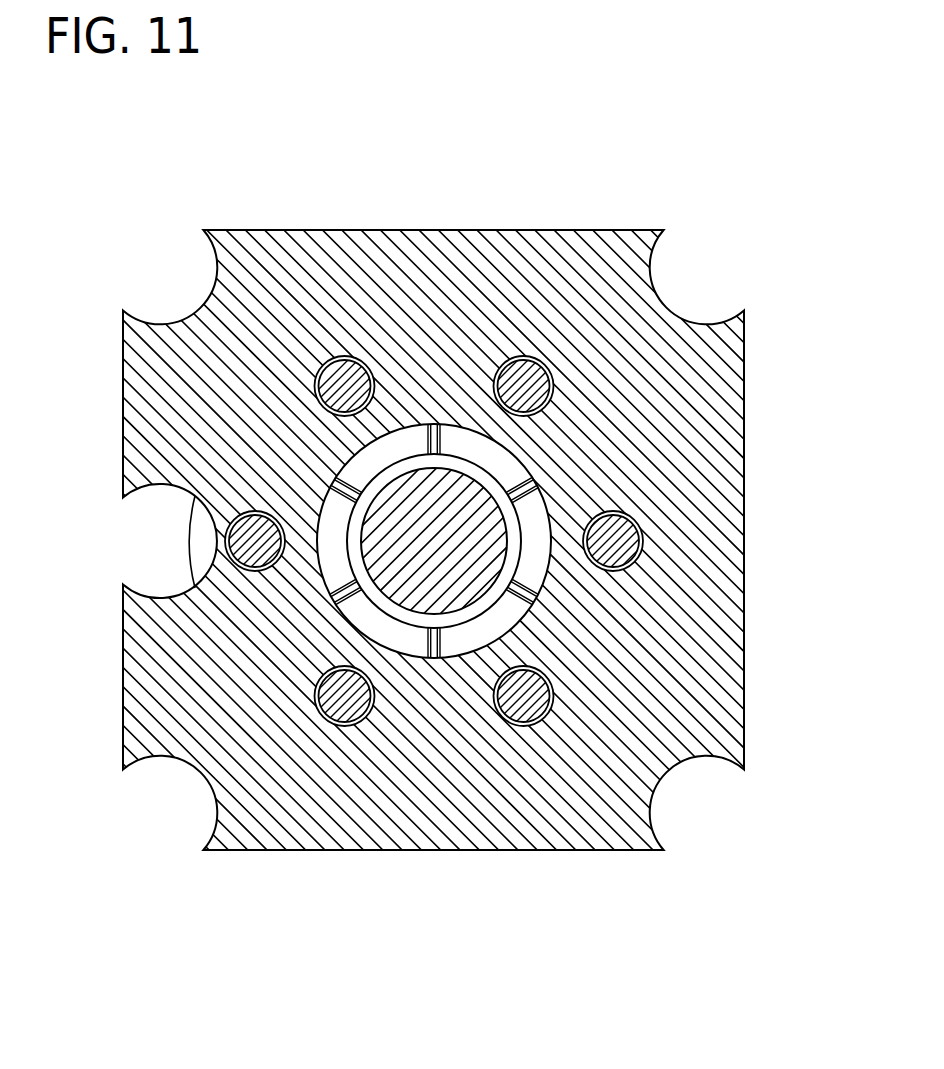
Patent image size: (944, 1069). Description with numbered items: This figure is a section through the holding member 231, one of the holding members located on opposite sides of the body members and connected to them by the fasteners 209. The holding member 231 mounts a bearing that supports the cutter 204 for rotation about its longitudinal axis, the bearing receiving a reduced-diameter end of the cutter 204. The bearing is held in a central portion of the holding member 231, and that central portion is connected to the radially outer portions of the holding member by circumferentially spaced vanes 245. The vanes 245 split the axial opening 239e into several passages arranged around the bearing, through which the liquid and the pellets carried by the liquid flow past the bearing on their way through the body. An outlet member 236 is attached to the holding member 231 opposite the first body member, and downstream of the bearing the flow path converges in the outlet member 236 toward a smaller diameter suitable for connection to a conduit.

The holding member 231 is at (585, 849).
The axial opening 239e is at (493, 458).
The cutter 204 is at (457, 620).
The vanes 245 is at (428, 443).
The fasteners 209 is at (527, 372).
The outlet member 236 is at (187, 550).